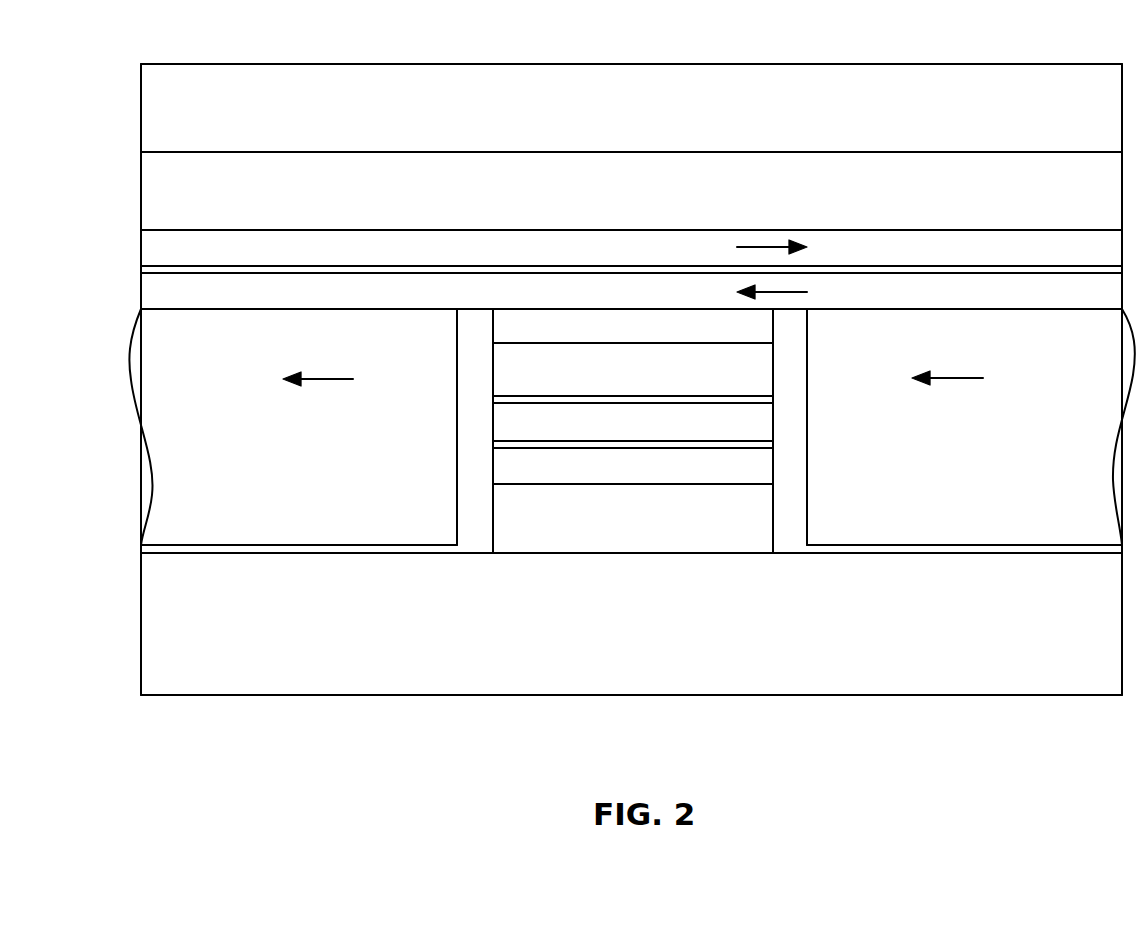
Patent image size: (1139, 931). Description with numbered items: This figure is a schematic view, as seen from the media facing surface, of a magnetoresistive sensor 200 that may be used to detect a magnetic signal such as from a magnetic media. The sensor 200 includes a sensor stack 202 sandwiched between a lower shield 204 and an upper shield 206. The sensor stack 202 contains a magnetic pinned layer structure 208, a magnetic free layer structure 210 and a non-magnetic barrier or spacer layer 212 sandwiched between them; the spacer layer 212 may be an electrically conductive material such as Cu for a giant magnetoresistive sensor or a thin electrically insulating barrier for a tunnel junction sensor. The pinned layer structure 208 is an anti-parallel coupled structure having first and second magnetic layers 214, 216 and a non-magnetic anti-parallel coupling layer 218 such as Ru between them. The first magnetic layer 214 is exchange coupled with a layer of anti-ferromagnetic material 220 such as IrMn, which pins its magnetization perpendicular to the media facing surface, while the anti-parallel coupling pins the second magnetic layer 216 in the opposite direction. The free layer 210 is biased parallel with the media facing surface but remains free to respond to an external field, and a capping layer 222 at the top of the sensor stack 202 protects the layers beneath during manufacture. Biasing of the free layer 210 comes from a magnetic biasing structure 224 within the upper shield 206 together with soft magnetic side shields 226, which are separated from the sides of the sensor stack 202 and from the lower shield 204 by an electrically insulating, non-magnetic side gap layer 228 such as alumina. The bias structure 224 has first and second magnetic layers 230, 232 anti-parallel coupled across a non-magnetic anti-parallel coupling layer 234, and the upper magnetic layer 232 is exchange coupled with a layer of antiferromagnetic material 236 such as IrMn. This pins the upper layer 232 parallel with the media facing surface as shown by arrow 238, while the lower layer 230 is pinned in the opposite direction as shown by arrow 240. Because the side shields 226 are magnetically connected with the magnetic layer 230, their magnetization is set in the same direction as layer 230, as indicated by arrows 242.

The magnetoresistive sensor 200 is at (770, 63).
The sensor stack 202 is at (447, 310).
The lower shield 204 is at (676, 623).
The upper shield 206 is at (120, 310).
The magnetic pinned layer structure 208 is at (785, 485).
The magnetic free layer structure 210 is at (683, 370).
The non-magnetic barrier or spacer layer 212 is at (653, 401).
The first magnetic layer 214 is at (586, 465).
The second magnetic layer 216 is at (582, 425).
The non-magnetic anti-parallel coupling layer 218 is at (653, 445).
The layer of anti-ferromagnetic material 220 is at (685, 517).
The capping layer 222 is at (680, 327).
The magnetic biasing structure 224 is at (652, 106).
The soft magnetic side shields 226 is at (346, 437).
The side gap layer 228 is at (470, 500).
The first magnetic layer of bias structure 230 is at (618, 291).
The second magnetic layer of bias structure 232 is at (618, 247).
The non-magnetic anti-parallel coupling layer 234 is at (847, 270).
The layer of antiferromagnetic material 236 is at (652, 196).
The arrow 238 is at (763, 247).
The arrow 240 is at (777, 293).
The arrows 242 is at (320, 379).